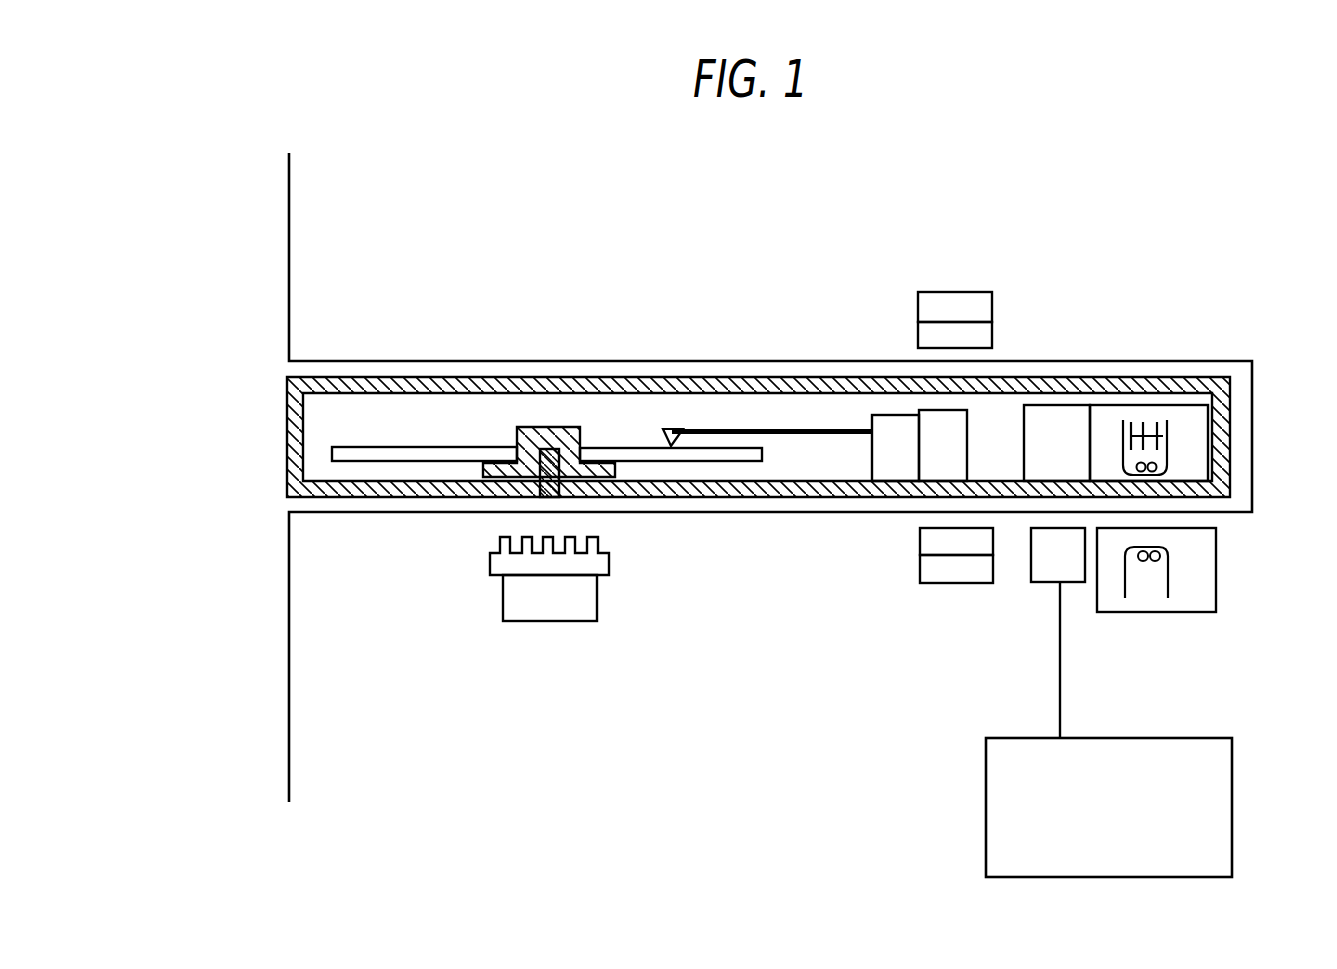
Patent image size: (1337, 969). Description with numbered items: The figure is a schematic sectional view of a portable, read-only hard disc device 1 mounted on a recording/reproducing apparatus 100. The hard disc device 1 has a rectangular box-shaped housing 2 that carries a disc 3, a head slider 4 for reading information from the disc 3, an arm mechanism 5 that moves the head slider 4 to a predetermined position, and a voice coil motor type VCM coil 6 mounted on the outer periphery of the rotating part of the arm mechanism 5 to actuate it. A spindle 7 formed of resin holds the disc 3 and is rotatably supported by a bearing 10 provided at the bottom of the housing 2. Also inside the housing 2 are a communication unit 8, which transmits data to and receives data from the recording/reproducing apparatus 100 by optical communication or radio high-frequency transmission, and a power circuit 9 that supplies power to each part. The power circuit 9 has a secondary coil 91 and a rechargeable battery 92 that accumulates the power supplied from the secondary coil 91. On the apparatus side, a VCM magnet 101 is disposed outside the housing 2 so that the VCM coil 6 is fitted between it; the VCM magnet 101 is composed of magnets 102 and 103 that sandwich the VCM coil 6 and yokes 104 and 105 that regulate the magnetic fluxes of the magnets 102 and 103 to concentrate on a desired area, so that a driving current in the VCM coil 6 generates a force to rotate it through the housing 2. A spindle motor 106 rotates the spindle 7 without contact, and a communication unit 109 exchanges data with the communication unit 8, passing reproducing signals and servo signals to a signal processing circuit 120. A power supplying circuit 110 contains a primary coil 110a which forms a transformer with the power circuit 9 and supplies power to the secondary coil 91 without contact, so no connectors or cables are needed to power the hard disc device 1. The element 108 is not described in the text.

The hard disc device 1 is at (242, 376).
The housing 2 is at (287, 433).
The disc 3 is at (398, 447).
The head slider 4 is at (676, 440).
The arm mechanism 5 is at (872, 458).
The VCM coil 6 is at (955, 463).
The spindle 7 is at (532, 426).
The communication unit 8 is at (1024, 420).
The power circuit 9 is at (1152, 405).
The bearing 10 is at (572, 449).
The secondary coil 91 is at (1167, 467).
The rechargeable battery 92 is at (1165, 430).
The recording/reproducing apparatus 100 is at (288, 670).
The VCM magnet 101 is at (990, 261).
The magnet 102 is at (920, 540).
The magnet 103 is at (918, 338).
The yoke 104 is at (920, 570).
The yoke 105 is at (918, 302).
The spindle motor 106 is at (597, 608).
The heat sink 108 is at (609, 562).
The communication unit 109 is at (1038, 583).
The power supplying circuit 110 is at (1185, 612).
The primary coil 110a is at (1168, 571).
The signal processing circuit 120 is at (1232, 805).